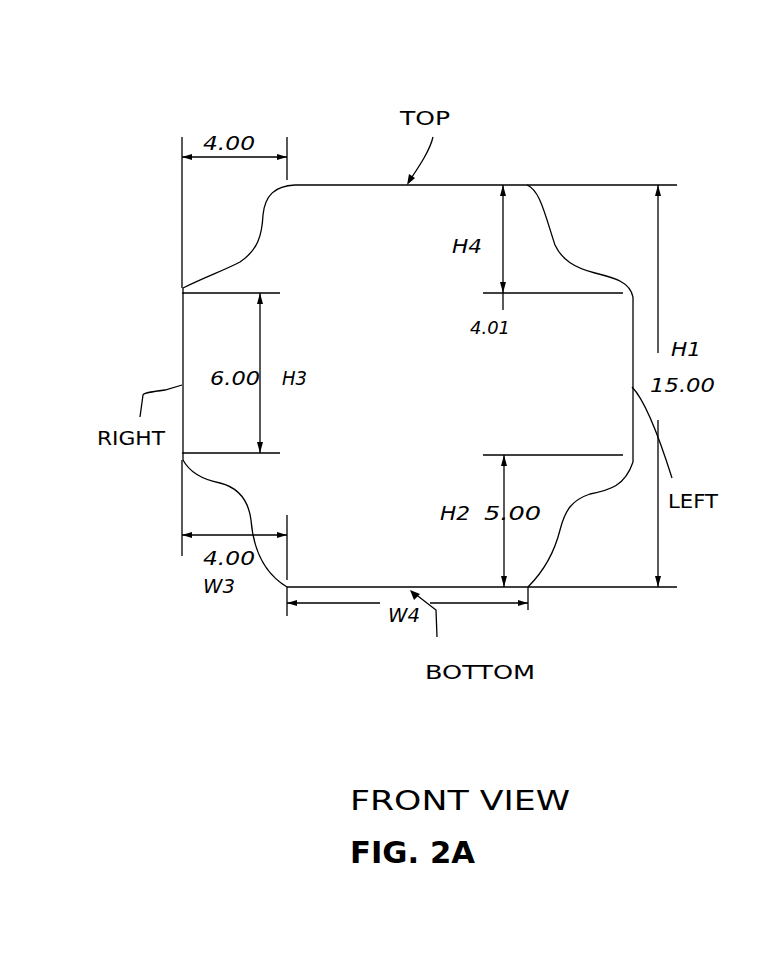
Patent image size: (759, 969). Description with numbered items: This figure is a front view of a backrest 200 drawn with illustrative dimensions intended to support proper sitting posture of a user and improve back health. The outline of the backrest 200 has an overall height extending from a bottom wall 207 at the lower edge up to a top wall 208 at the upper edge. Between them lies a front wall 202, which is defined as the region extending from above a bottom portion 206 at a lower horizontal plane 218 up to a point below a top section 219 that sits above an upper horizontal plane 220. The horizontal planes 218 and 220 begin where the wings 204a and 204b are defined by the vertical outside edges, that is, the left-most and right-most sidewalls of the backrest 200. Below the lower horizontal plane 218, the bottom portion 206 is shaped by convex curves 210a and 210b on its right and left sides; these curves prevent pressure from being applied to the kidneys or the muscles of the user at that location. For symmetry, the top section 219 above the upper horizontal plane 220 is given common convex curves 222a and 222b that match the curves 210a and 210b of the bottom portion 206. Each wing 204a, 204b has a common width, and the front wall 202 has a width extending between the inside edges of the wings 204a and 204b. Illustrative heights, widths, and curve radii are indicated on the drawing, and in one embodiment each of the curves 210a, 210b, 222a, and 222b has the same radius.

The backrest 200 is at (460, 81).
The front wall 202 is at (367, 416).
The wing 204a is at (212, 252).
The wing 204b is at (592, 250).
The bottom portion 206 is at (572, 540).
The bottom wall 207 is at (353, 582).
The top wall 208 is at (453, 185).
The convex curve 210a is at (232, 492).
The convex curve 210b is at (578, 500).
The horizontal plane 218 is at (582, 432).
The top section 219 is at (680, 240).
The horizontal plane 220 is at (570, 297).
The convex curve 222a is at (255, 259).
The convex curve 222b is at (568, 261).